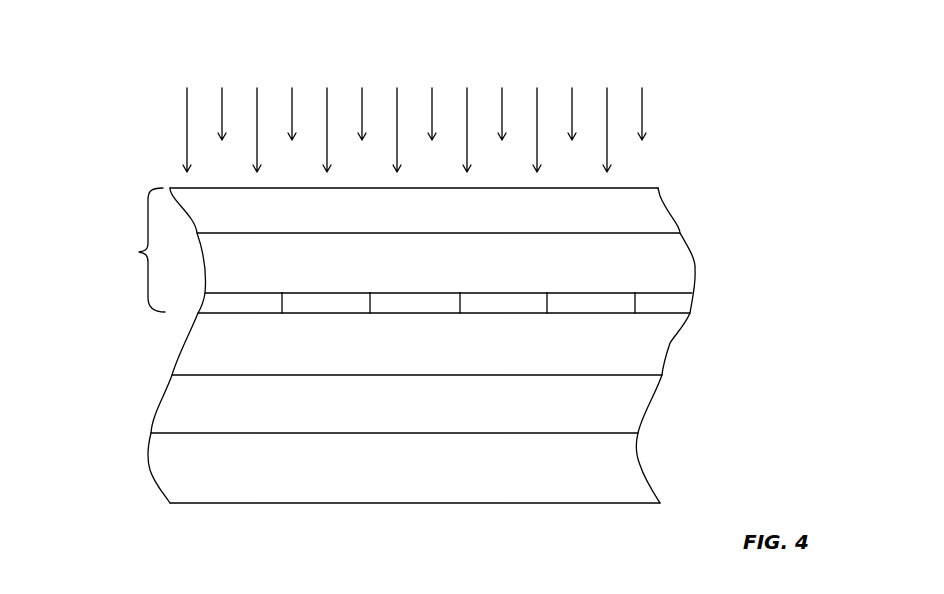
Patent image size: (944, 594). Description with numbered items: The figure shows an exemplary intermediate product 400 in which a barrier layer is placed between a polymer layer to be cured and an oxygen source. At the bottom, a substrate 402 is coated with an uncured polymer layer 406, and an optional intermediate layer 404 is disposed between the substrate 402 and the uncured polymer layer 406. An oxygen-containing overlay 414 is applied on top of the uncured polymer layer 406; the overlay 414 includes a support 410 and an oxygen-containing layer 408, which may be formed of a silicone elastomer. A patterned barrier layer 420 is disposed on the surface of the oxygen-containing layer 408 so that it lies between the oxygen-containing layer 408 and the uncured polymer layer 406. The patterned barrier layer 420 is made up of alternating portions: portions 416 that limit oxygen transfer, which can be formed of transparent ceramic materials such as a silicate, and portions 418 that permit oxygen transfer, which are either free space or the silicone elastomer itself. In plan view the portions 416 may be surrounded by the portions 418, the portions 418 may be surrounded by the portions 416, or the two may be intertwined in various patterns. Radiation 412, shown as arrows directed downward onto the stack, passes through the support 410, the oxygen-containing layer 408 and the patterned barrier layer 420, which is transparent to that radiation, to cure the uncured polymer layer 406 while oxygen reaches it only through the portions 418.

The photovoltaic device 400 is at (146, 178).
The substrate 402 is at (627, 478).
The intermediate layer 404 is at (632, 413).
The uncured polymer layer 406 is at (667, 343).
The oxygen-containing layer 408 is at (685, 270).
The support 410 is at (648, 212).
The radiation 412 is at (690, 104).
The oxygen-containing overlay 414 is at (123, 250).
The portions that limit oxygen transfer 416 is at (322, 305).
The portions that permit oxygen transfer 418 is at (227, 303).
The patterned barrier layer 420 is at (680, 303).